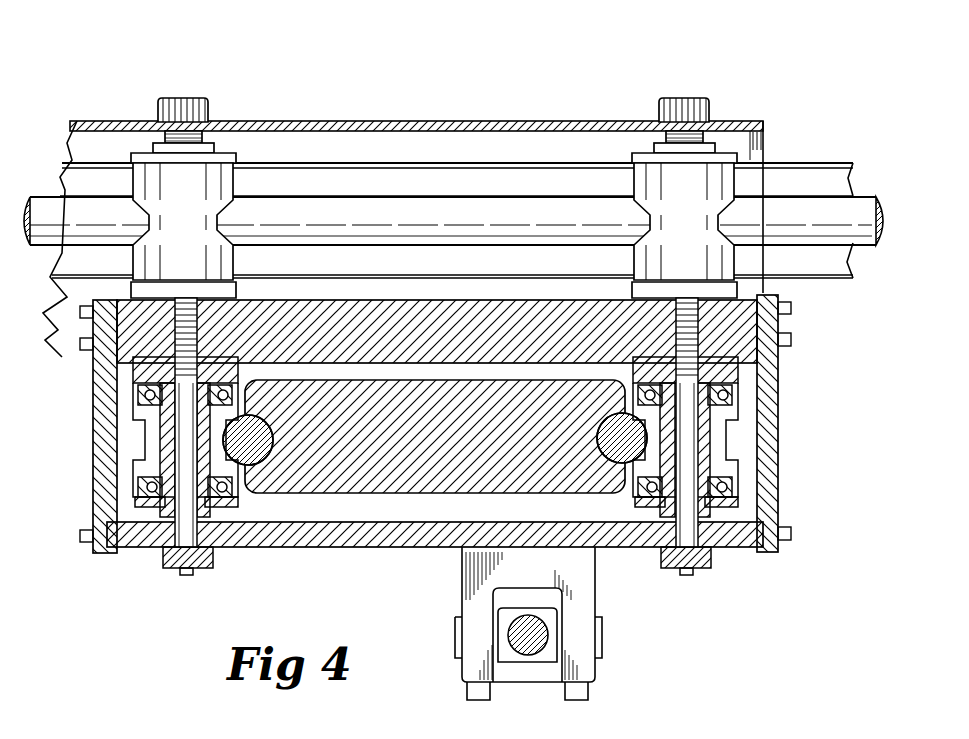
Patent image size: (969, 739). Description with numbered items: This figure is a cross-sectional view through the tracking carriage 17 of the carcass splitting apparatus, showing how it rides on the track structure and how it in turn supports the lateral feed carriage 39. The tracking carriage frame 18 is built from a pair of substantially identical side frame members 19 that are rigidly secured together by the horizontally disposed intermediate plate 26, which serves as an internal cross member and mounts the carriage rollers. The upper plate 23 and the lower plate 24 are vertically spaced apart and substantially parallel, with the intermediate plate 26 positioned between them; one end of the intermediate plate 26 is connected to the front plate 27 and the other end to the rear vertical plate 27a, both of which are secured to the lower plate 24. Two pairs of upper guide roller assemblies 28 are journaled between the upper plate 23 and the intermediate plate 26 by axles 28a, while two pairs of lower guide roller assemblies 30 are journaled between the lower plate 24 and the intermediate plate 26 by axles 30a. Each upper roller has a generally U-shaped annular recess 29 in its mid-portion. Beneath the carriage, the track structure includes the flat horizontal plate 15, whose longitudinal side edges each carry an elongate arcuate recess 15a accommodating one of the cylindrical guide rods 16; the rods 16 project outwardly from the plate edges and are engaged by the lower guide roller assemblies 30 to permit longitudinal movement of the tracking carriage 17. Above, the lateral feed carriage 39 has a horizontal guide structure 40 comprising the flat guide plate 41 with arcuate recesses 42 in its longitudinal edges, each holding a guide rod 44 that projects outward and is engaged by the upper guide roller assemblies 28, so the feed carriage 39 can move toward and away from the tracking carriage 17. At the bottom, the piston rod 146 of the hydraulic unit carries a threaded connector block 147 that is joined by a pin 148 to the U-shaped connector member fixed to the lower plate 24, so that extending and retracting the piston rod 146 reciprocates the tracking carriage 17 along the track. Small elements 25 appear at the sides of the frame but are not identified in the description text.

The horizontally disposed plate 15 is at (455, 451).
The arcuate recess 15a is at (268, 452).
The guide rod 16 is at (256, 421).
The tracking carriage 17 is at (535, 90).
The tracking carriage frame 18 is at (602, 117).
The side frame member 19 is at (64, 342).
The upper plate 23 is at (470, 121).
The lower plate 24 is at (352, 549).
The fastening bolts 25 is at (790, 328).
The intermediate plate 26 is at (415, 341).
The front plate 27 is at (780, 383).
The rear vertical plate 27a is at (96, 473).
The upper guide roller assembly 28 is at (247, 189).
The axle 28a is at (191, 318).
The annular recess 29 is at (148, 218).
The lower guide roller assembly 30 is at (126, 407).
The axle 30a is at (204, 526).
The lateral feed carriage 39 is at (829, 146).
The horizontal guide structure 40 is at (862, 158).
The guide plate 41 is at (838, 163).
The arcuate recess 42 is at (855, 194).
The guide rod 44 is at (879, 206).
The piston rod 146 is at (530, 656).
The connector block 147 is at (599, 641).
The pin 148 is at (462, 603).